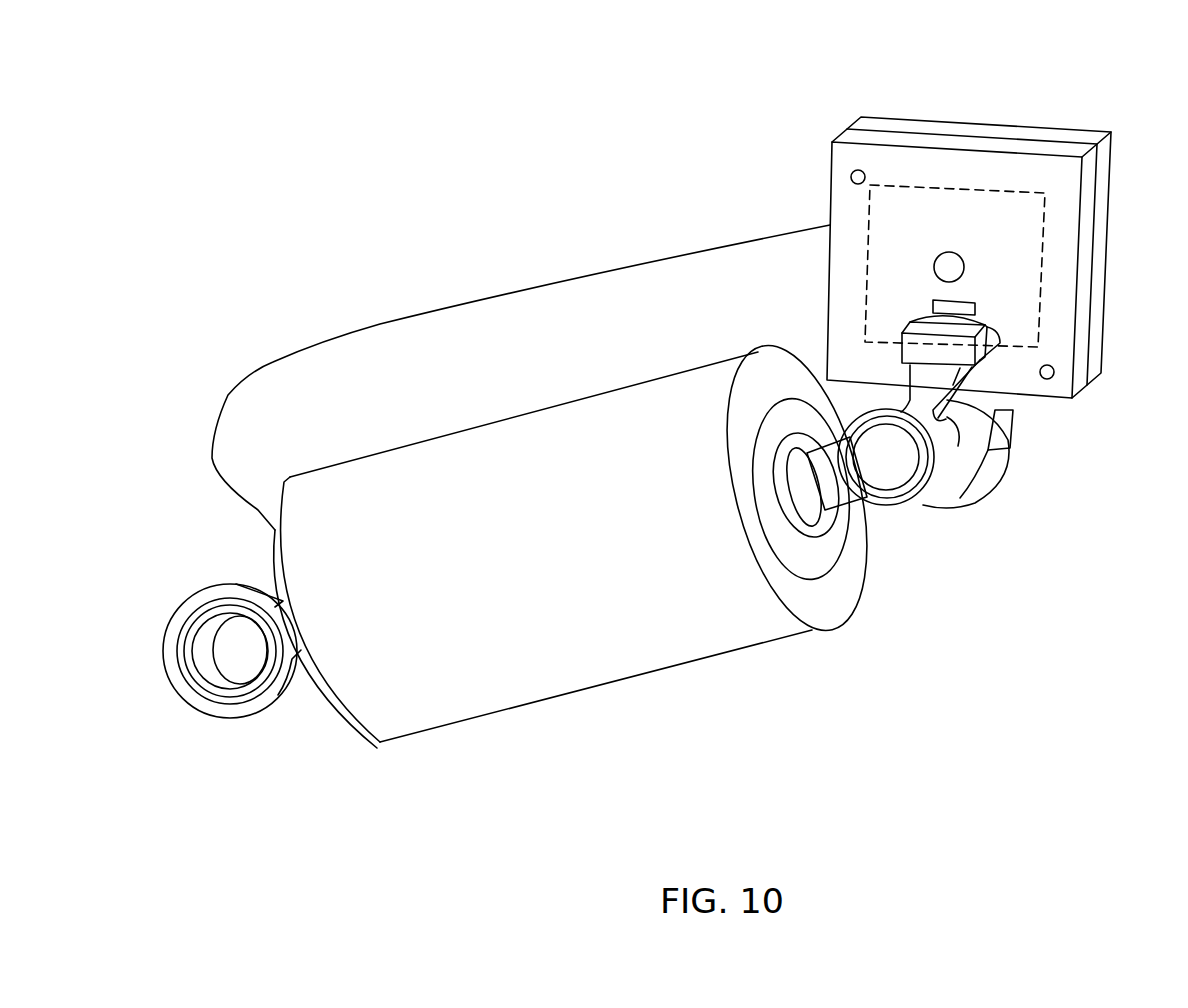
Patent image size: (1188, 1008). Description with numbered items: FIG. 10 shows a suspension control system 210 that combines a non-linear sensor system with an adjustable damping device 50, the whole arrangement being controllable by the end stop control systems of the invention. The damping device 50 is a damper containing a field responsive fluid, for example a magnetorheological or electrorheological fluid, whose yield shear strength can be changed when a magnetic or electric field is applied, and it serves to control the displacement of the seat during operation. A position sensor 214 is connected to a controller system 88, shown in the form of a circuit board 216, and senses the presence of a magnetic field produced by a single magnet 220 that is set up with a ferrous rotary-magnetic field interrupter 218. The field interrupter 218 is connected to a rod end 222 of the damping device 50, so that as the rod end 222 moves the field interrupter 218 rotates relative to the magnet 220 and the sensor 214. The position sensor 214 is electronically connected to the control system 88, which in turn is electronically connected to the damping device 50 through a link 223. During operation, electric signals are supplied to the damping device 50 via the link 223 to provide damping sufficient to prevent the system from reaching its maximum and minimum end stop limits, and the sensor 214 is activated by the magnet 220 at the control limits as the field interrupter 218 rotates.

The suspension control system 210 is at (345, 182).
The controller system 88 is at (992, 112).
The circuit board 216 is at (887, 222).
The magnet 220 is at (913, 338).
The position sensor 214 is at (965, 307).
The link 223 is at (273, 360).
The rotary-magnetic field interrupter 218 is at (943, 380).
The rod end 222 is at (940, 460).
The damping device 50 is at (578, 690).